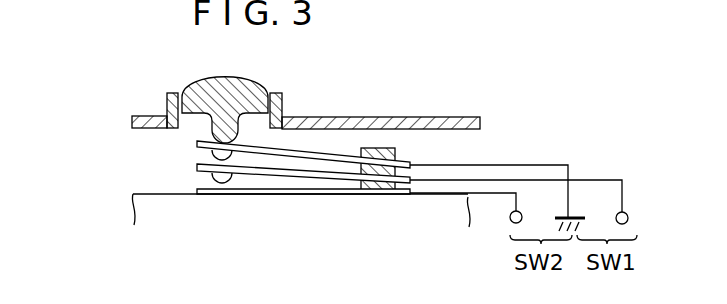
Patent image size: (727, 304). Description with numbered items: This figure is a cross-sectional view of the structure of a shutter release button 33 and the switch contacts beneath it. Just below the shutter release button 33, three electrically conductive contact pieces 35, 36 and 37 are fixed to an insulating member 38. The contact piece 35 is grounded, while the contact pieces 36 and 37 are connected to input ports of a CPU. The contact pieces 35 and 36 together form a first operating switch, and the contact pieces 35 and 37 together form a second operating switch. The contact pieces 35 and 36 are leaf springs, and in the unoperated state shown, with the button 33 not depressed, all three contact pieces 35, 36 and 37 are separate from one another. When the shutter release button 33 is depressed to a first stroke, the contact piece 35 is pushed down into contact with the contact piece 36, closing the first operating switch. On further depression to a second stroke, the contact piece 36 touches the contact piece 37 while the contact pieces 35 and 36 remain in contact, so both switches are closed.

The shutter release button 33 is at (203, 82).
The contact piece 35 is at (307, 153).
The contact piece 36 is at (327, 184).
The contact piece 37 is at (290, 195).
The insulating member 38 is at (377, 148).